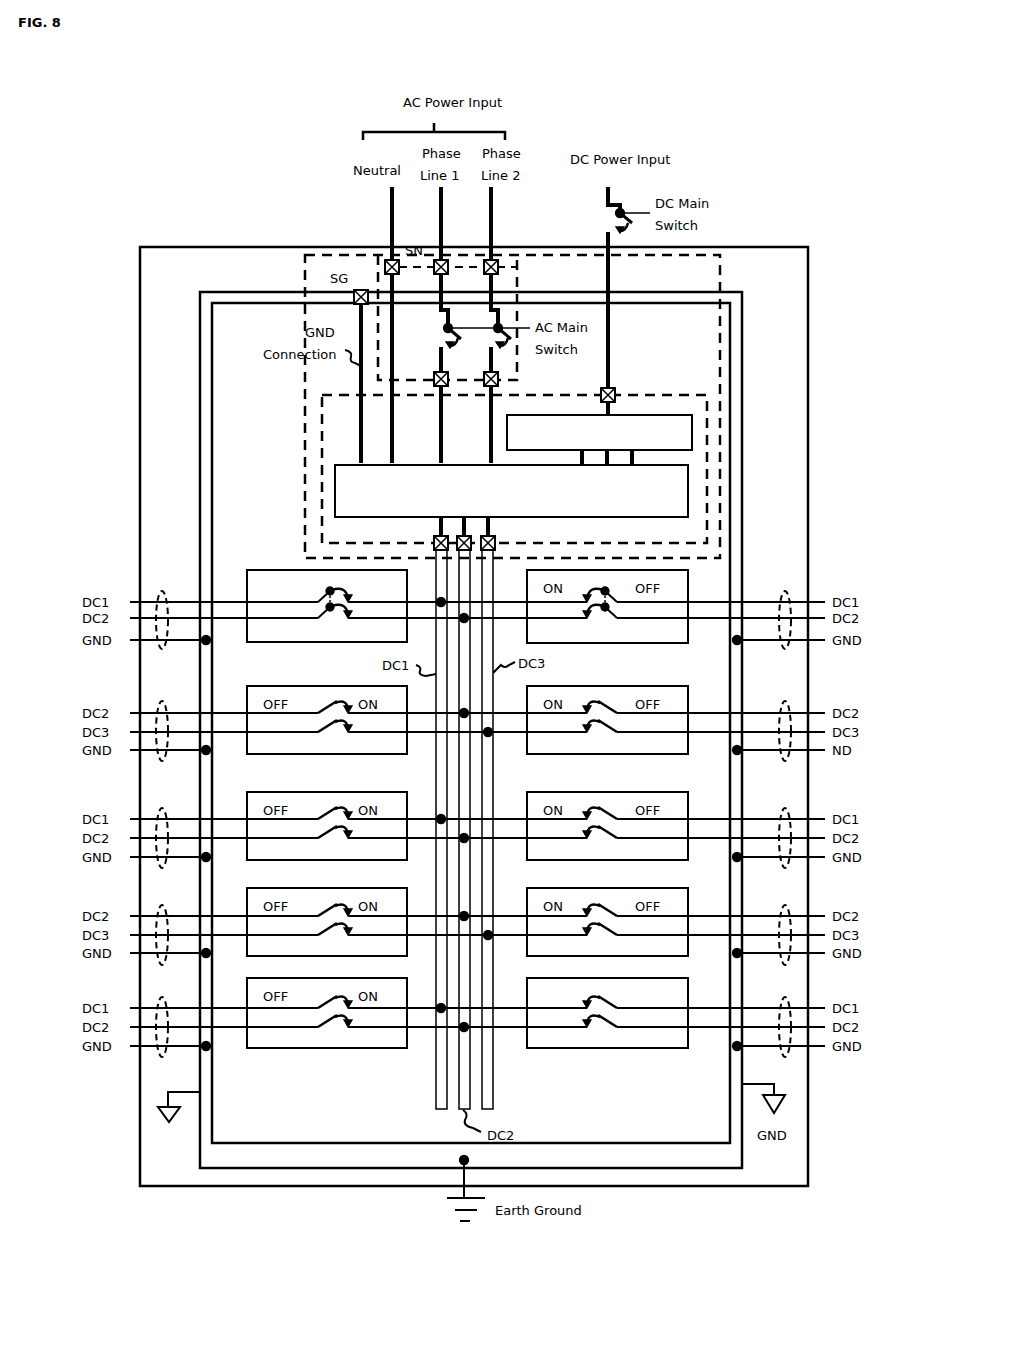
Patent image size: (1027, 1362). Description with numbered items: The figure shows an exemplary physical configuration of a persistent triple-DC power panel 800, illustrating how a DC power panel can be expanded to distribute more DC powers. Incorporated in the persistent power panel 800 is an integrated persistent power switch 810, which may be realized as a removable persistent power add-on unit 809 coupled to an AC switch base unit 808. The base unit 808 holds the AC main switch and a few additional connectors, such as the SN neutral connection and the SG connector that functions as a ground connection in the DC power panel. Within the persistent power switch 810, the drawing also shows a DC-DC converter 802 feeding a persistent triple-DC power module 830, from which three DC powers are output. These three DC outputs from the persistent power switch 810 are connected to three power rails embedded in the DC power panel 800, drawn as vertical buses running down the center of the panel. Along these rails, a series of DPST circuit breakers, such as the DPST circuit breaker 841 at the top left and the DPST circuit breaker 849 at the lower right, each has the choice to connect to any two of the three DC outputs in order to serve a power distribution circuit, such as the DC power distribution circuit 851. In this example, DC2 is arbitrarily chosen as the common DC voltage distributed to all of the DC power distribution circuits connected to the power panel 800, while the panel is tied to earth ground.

The persistent triple-DC power panel 800 is at (742, 247).
The DC-DC converter 802 is at (599, 432).
The AC switch base unit 808 is at (378, 272).
The persistent power add-on unit 809 is at (650, 398).
The persistent power switch 810 is at (721, 276).
The persistent triple-DC power module 830 is at (511, 491).
The DPST circuit breaker 841 is at (288, 569).
The DPST circuit breaker 849 is at (612, 1050).
The DC power distribution circuit 851 is at (162, 590).